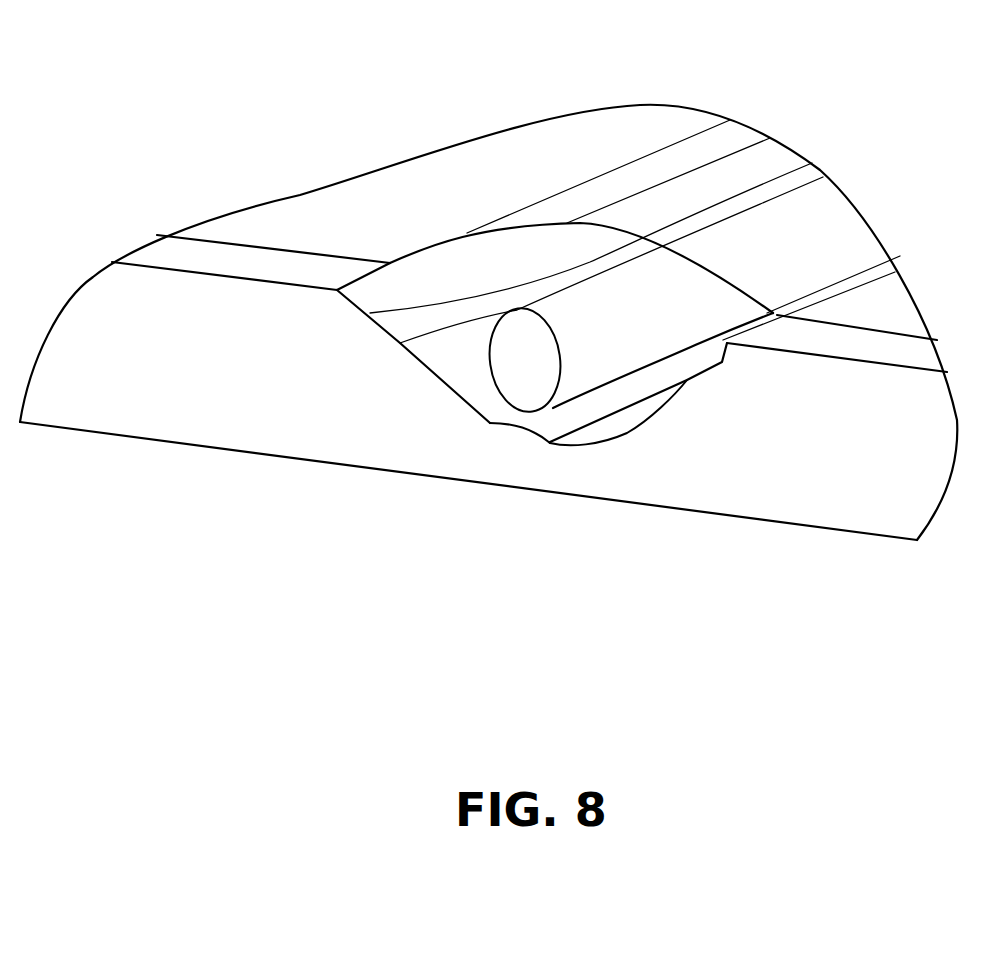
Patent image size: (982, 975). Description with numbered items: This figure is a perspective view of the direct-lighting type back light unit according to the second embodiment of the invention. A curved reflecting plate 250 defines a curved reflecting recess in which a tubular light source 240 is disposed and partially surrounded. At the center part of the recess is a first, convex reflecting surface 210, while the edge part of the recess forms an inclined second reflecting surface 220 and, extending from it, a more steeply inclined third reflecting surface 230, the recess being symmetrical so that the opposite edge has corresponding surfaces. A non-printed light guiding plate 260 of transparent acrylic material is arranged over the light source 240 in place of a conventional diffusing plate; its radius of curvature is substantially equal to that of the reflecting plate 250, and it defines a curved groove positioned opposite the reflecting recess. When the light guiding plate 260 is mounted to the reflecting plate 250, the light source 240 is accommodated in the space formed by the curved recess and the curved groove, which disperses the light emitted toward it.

The first reflecting surface 210 is at (515, 435).
The second reflecting surface 220 is at (385, 326).
The third reflecting surface 230 is at (330, 315).
The light source 240 is at (510, 355).
The reflecting plate 250 is at (740, 523).
The non-printed light guiding plate 260 is at (343, 195).